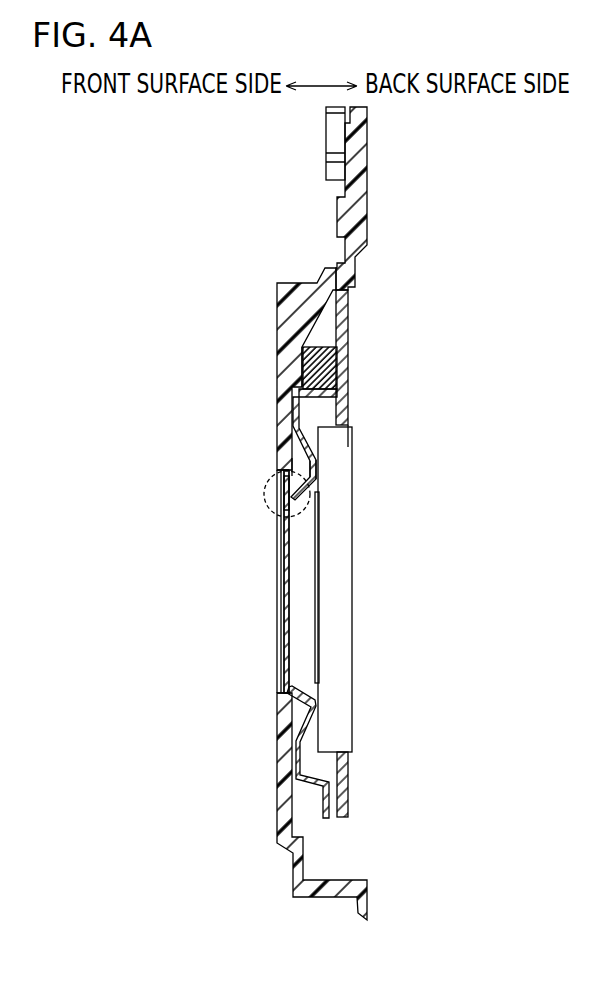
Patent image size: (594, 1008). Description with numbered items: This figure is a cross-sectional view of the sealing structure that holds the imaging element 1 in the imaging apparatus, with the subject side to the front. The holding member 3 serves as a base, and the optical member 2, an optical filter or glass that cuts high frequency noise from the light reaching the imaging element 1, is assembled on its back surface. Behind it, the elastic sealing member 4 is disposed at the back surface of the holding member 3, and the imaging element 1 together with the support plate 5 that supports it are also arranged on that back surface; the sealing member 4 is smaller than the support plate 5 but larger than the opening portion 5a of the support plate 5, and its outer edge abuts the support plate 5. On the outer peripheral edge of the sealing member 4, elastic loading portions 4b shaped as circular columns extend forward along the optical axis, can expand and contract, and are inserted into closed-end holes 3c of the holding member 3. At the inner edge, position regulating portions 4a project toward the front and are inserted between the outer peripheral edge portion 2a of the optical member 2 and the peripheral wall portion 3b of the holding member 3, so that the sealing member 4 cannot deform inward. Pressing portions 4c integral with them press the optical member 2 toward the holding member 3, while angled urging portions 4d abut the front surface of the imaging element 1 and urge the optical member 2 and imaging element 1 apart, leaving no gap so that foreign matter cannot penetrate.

The imaging element 1 is at (340, 575).
The optical member 2 is at (279, 566).
The outer peripheral edge portion 2a is at (277, 507).
The holding member 3 is at (278, 297).
The peripheral wall portion 3b is at (280, 474).
The closed-end hole 3c is at (300, 366).
The sealing member 4 is at (292, 408).
The position regulating portion 4a is at (284, 693).
The elastic loading portion 4b is at (338, 367).
The pressing portion 4c is at (313, 507).
The urging portion 4d is at (330, 463).
The support plate 5 is at (347, 313).
The opening portion 5a is at (345, 443).